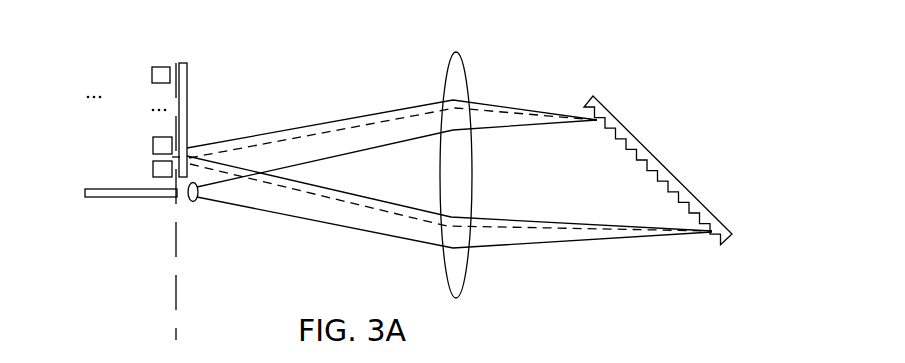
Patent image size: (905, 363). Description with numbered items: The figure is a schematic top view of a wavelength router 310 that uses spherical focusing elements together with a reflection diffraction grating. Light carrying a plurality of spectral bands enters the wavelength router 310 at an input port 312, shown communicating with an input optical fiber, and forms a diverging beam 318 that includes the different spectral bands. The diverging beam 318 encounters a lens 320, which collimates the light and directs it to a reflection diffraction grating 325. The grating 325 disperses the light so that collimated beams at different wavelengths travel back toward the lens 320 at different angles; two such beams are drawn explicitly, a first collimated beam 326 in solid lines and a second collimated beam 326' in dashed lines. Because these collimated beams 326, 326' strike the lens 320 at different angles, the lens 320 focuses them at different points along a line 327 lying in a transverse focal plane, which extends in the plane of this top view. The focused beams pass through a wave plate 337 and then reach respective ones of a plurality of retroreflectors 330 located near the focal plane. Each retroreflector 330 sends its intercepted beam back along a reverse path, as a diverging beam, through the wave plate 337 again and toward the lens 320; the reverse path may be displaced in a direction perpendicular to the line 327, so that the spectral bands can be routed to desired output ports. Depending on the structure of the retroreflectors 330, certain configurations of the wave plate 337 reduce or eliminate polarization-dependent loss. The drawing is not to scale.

The wavelength router 310 is at (689, 115).
The input port 312 is at (123, 197).
The diverging beam 318 is at (197, 203).
The lens 320 is at (468, 278).
The reflection diffraction grating 325 is at (703, 202).
The collimated beam 326 is at (449, 167).
The collimated beam 326' is at (450, 155).
The line 327 is at (177, 302).
The retroreflectors 330 is at (152, 75).
The wave plate 337 is at (187, 87).